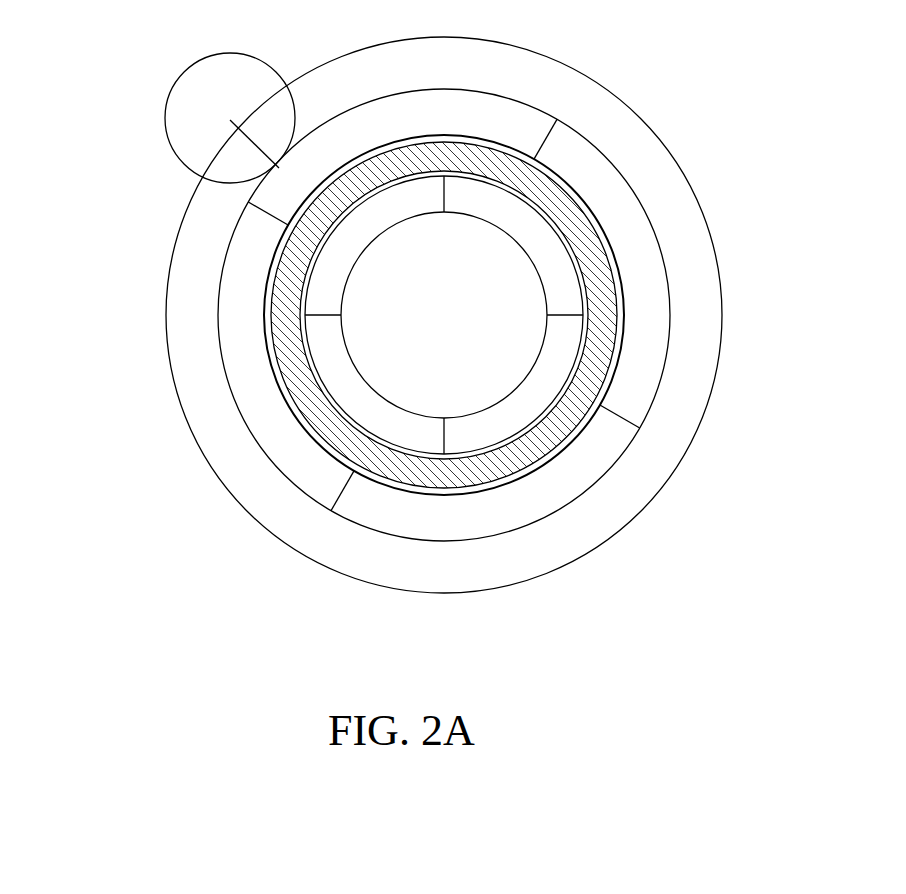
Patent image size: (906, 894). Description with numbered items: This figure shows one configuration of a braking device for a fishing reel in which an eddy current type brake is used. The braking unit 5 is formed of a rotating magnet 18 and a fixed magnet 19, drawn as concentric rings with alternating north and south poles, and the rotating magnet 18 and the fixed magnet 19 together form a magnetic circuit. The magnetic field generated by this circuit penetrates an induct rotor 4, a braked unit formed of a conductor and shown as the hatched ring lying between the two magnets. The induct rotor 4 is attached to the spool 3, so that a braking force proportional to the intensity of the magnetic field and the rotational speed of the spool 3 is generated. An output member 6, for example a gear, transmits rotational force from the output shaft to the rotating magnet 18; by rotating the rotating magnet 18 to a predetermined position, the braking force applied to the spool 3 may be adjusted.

The spool 3 is at (645, 480).
The induct rotor 4 is at (607, 327).
The braking unit 5 is at (70, 273).
The output member 6 is at (190, 112).
The rotating magnet 18 is at (243, 291).
The fixed magnet 19 is at (335, 359).